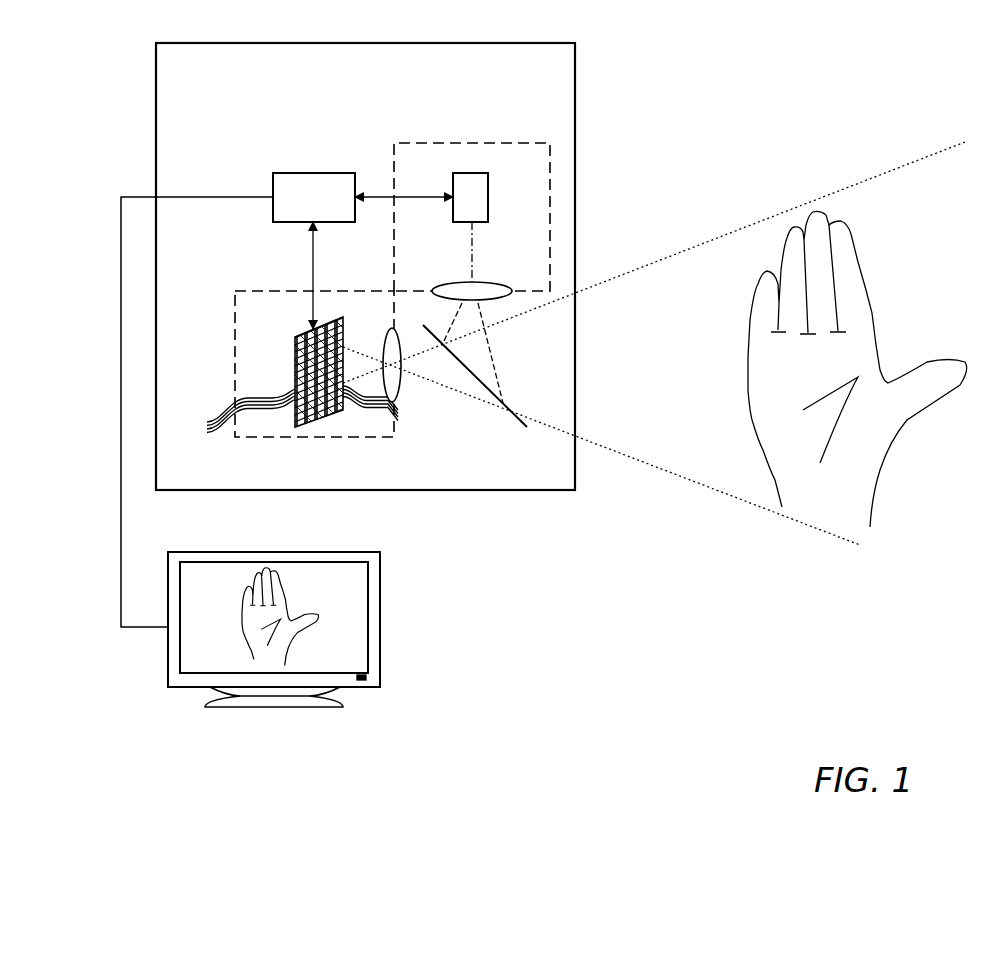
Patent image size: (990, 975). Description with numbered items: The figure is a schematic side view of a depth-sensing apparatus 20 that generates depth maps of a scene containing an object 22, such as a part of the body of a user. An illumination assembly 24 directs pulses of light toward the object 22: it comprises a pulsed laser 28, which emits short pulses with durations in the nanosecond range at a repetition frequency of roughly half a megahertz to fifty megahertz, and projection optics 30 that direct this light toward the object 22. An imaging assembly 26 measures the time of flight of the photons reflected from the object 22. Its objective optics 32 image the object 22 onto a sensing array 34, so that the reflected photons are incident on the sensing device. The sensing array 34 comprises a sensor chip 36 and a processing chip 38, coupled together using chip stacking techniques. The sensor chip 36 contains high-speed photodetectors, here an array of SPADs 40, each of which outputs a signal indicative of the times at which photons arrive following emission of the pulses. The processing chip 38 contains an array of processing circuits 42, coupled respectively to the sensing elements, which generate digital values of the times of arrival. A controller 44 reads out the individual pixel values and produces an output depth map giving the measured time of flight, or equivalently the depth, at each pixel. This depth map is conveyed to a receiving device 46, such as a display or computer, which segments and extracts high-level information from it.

The depth-sensing apparatus 20 is at (156, 165).
The object 22 is at (872, 312).
The illumination assembly 24 is at (427, 142).
The imaging assembly 26 is at (235, 318).
The pulsed laser 28 is at (482, 207).
The projection optics 30 is at (499, 286).
The objective optics 32 is at (396, 405).
The sensing array 34 is at (310, 352).
The sensor chip 36 is at (310, 357).
The processing chip 38 is at (295, 361).
The SPAD 40 is at (400, 414).
The processing circuit 42 is at (238, 412).
The controller 44 is at (272, 178).
The receiving device 46 is at (380, 583).